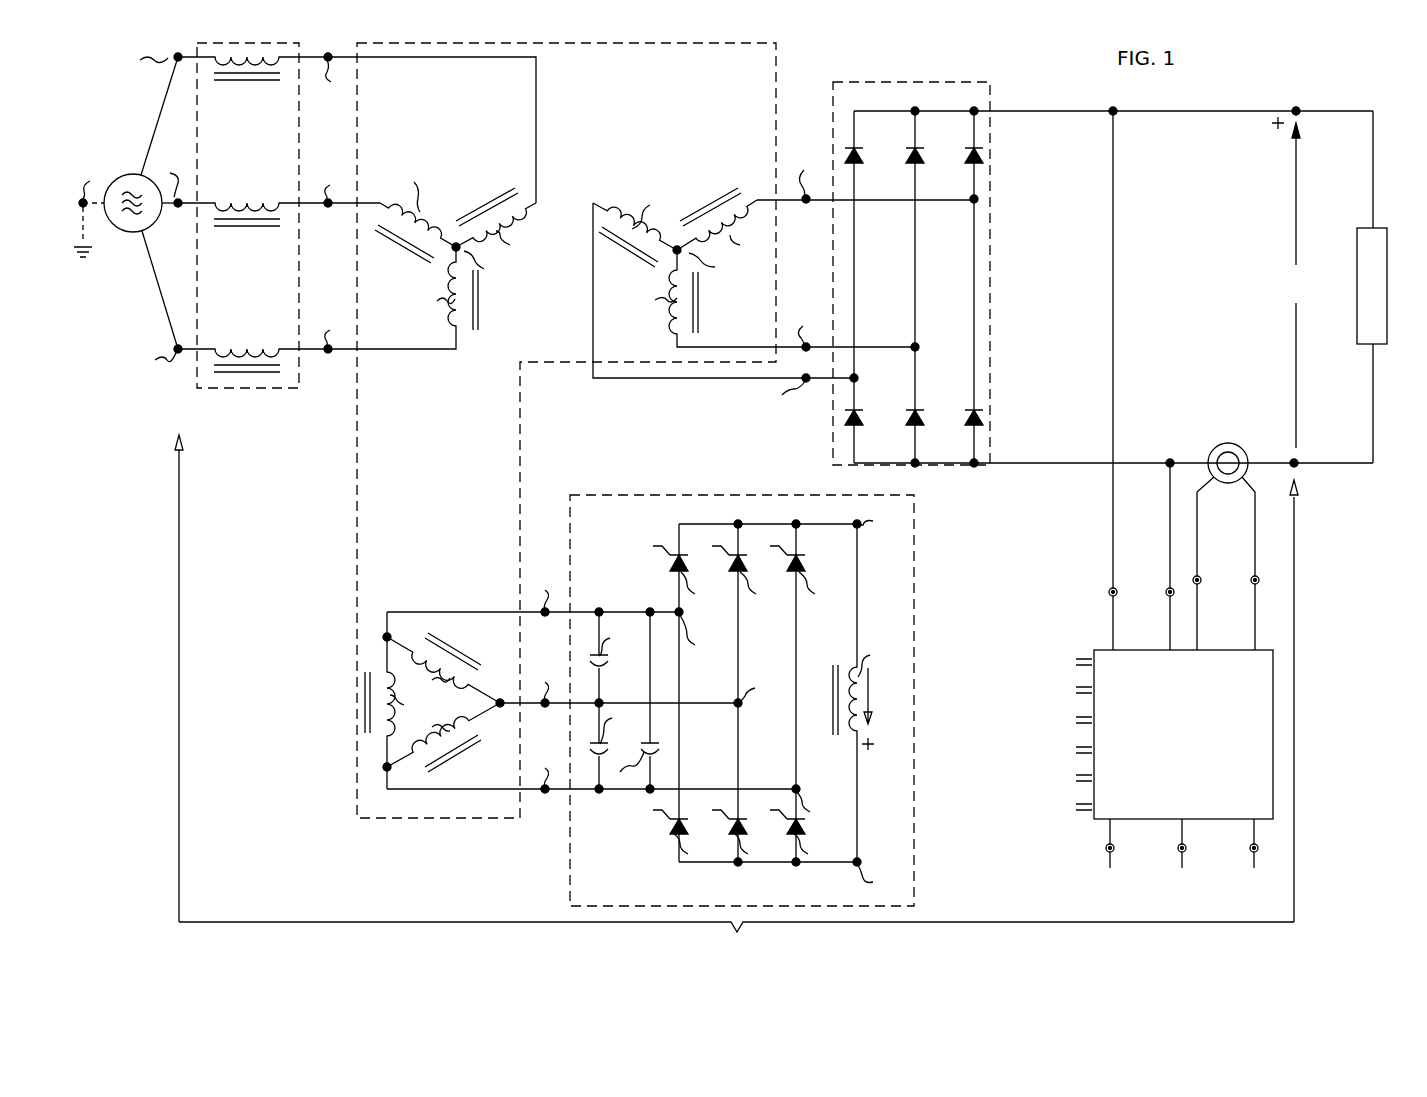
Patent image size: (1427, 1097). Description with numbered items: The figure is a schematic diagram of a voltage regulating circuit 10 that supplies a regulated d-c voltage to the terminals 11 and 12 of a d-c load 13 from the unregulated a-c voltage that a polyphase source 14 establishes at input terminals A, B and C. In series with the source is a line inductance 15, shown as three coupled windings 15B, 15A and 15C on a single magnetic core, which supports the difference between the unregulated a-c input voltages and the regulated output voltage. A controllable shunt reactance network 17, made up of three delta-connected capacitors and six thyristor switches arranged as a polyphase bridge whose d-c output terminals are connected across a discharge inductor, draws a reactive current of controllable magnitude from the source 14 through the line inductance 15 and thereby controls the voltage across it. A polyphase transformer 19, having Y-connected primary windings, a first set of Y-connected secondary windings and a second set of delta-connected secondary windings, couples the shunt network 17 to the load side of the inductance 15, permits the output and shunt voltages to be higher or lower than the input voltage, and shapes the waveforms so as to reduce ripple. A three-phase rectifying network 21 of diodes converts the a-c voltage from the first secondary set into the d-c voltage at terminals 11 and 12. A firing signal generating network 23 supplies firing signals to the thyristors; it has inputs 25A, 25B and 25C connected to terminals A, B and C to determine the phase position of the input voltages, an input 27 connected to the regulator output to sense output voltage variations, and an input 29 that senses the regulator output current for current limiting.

The voltage regulating circuit 10 is at (736, 698).
The output terminal 11 is at (1298, 110).
The output terminal 12 is at (1295, 463).
The d-c load 13 is at (1387, 297).
The polyphase source 14 is at (114, 177).
The line inductance 15 is at (253, 240).
The coupled winding 15A is at (250, 203).
The coupled winding 15B is at (212, 61).
The coupled winding 15C is at (250, 348).
The controllable shunt reactance network 17 is at (914, 818).
The polyphase transformer 19 is at (357, 772).
The three-phase rectifying network 21 is at (964, 468).
The firing signal generating network 23 is at (1094, 650).
The input 25A is at (1106, 846).
The input 25B is at (1180, 846).
The input 25C is at (1252, 846).
The input 27 is at (1168, 588).
The input 29 is at (1255, 578).